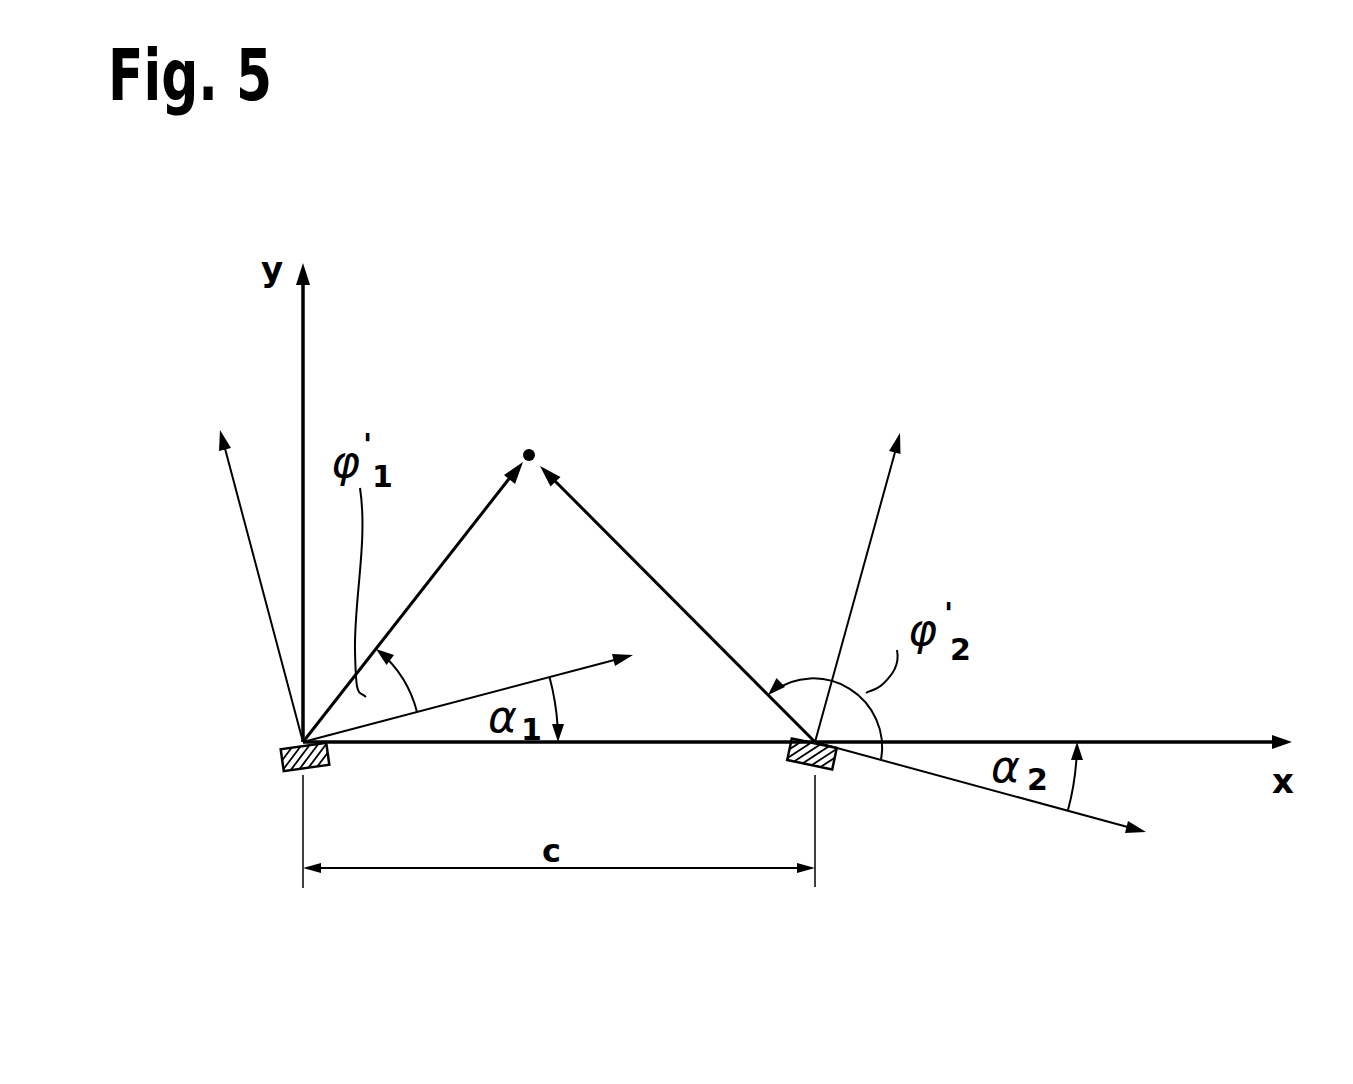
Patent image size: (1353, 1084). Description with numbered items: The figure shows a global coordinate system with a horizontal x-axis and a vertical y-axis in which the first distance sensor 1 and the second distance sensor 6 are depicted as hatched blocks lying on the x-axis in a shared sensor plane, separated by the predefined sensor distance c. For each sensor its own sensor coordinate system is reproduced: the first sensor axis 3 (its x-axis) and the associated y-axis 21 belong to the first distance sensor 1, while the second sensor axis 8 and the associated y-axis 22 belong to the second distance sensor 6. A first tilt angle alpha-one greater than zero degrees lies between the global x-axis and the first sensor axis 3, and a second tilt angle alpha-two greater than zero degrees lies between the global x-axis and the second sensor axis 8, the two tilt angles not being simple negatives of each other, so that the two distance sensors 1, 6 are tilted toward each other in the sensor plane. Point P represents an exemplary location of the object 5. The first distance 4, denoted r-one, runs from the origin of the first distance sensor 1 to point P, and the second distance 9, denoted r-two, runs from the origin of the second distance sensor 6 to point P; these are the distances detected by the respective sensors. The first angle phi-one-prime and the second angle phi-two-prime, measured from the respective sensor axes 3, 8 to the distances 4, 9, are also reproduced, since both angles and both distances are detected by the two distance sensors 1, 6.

The first distance sensor 1 is at (281, 754).
The second distance sensor 6 is at (838, 770).
The y-axis of first sensor coordinate system 21 is at (257, 571).
The y-axis of second sensor coordinate system 22 is at (870, 545).
The first sensor axis 3 is at (519, 683).
The second sensor axis 8 is at (947, 779).
The first distance 4 is at (434, 575).
The second distance 9 is at (655, 580).
The object 5 is at (542, 441).